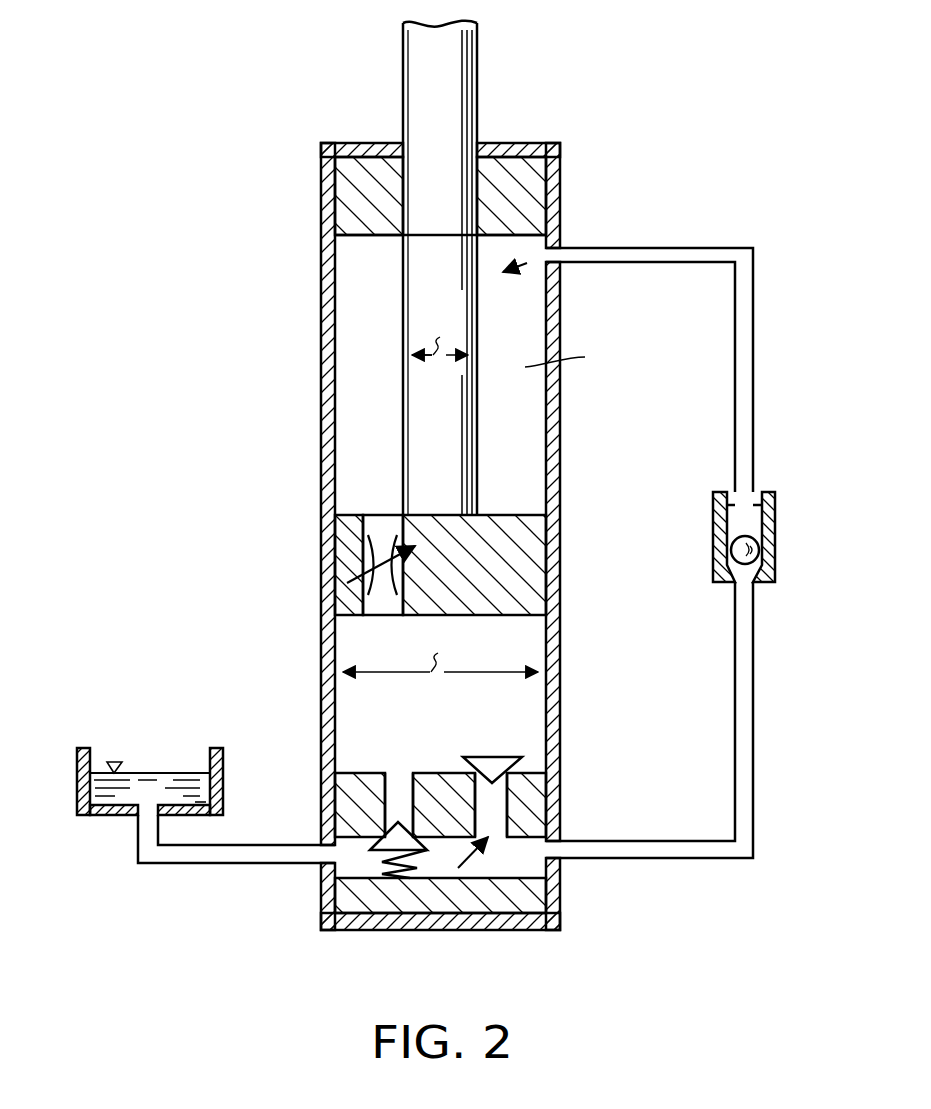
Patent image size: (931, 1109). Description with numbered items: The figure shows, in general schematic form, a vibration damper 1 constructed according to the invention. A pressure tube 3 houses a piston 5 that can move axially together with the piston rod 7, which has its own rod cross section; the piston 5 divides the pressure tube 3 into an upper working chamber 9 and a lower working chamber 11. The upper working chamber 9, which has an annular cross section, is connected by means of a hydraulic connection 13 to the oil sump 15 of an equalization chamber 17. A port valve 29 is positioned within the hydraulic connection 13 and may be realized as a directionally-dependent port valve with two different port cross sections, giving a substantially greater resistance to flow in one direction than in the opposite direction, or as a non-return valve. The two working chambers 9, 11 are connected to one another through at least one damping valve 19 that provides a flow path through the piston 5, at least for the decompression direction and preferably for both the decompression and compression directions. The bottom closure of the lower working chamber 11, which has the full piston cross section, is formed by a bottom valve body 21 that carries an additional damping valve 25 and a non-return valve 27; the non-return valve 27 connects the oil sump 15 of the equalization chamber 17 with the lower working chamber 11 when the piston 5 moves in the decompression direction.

The vibration damper 1 is at (218, 497).
The pressure tube 3 is at (550, 727).
The piston 5 is at (530, 545).
The piston rod 7 is at (463, 73).
The upper working chamber 9 is at (530, 447).
The lower working chamber 11 is at (520, 700).
The hydraulic connection 13 is at (747, 371).
The oil sump 15 is at (118, 793).
The equalization chamber 17 is at (138, 758).
The damping valve 19 is at (368, 548).
The bottom valve body 21 is at (523, 818).
The additional damping valve 25 is at (386, 786).
The non-return valve 27 is at (488, 807).
The port valve 29 is at (753, 536).